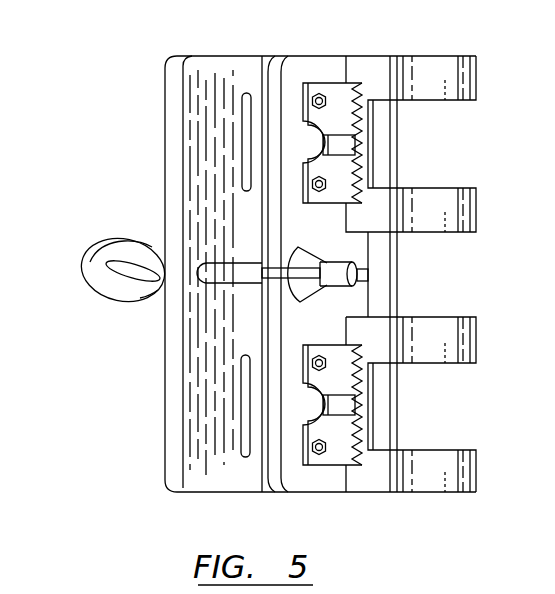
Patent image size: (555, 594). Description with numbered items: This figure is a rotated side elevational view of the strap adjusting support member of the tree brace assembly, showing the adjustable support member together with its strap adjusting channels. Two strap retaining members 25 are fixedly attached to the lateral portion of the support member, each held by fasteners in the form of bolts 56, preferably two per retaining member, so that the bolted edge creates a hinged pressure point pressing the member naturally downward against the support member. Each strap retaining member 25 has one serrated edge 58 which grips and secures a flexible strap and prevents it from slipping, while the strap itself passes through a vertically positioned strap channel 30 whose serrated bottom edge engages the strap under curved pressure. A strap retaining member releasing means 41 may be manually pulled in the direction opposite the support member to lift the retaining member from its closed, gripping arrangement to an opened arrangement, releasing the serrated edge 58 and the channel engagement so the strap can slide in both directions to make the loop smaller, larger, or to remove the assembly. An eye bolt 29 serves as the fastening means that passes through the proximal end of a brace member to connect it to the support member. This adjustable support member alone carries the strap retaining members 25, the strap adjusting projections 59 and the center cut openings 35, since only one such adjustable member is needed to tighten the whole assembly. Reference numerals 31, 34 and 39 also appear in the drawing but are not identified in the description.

The strap retaining member 25 is at (337, 457).
The eye bolt 29 is at (116, 289).
The strap channel 30 is at (240, 128).
The spine bar 31 is at (398, 265).
The housing 34 is at (162, 150).
The center cut opening 35 is at (420, 427).
The knob 39 is at (288, 283).
The strap retaining member releasing means 41 is at (337, 405).
The bolt 56 is at (319, 94).
The serrated edge 58 is at (358, 168).
The strap adjusting projection 59 is at (435, 447).